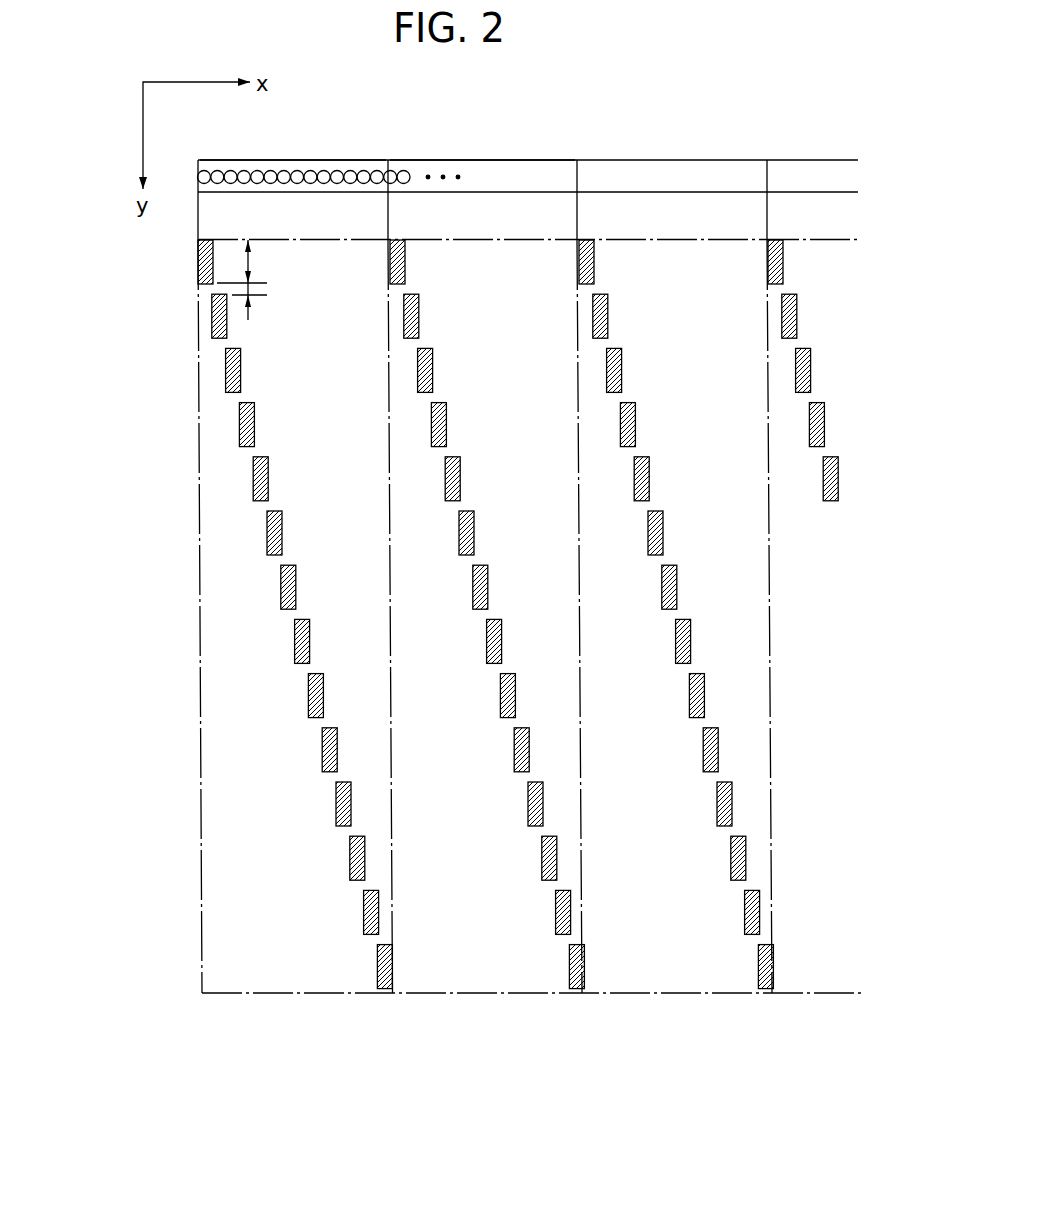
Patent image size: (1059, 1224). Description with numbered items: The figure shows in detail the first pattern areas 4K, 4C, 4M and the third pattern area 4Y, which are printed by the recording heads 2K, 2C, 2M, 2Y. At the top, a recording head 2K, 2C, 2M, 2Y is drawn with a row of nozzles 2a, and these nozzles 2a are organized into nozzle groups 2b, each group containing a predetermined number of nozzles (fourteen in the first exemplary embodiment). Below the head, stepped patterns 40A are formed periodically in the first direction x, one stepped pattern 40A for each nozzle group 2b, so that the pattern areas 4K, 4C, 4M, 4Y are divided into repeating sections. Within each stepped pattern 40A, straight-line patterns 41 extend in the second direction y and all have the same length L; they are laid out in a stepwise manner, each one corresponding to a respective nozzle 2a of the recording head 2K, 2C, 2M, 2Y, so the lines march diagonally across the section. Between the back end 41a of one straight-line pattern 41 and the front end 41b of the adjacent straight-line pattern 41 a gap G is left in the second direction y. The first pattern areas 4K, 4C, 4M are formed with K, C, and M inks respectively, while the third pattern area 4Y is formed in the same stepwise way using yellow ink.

The recording head 2K is at (528, 157).
The recording head 2C is at (528, 157).
The recording head 2M is at (528, 157).
The recording head 2Y is at (712, 146).
The nozzles 2a is at (271, 170).
The nozzle groups 2b is at (455, 160).
The first pattern area 4K is at (447, 661).
The first pattern area 4C is at (447, 661).
The first pattern area 4M is at (447, 661).
The third pattern area 4Y is at (126, 240).
The straight-line patterns 41 is at (489, 661).
The back end 41a is at (206, 284).
The front end 41b is at (211, 294).
The stepped patterns 40A is at (771, 1015).
The length L is at (244, 280).
The gap G is at (260, 293).